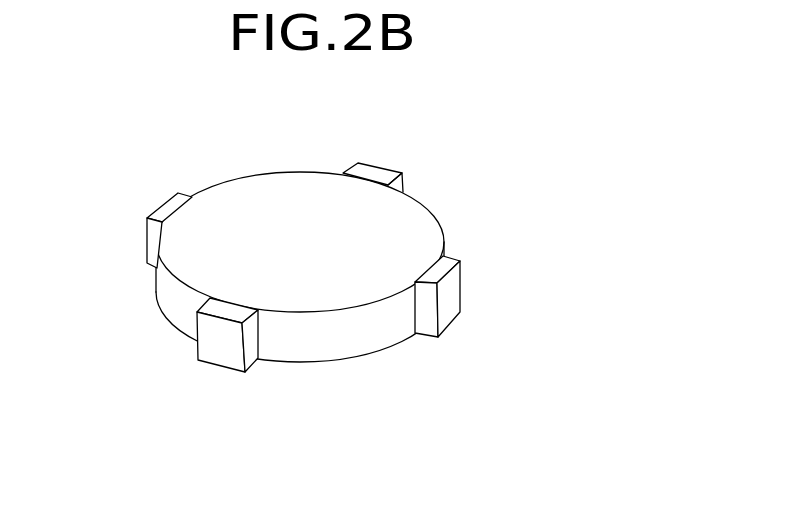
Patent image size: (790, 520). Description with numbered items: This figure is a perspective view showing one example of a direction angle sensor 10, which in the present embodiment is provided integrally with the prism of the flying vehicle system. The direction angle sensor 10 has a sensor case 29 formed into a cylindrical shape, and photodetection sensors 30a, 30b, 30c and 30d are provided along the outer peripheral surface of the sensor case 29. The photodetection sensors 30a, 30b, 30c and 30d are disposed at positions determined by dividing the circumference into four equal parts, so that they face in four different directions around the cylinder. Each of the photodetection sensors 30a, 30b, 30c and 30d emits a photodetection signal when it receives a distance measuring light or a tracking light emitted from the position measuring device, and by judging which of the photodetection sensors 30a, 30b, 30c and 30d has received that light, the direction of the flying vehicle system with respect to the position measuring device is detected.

The direction angle sensor 10 is at (344, 258).
The sensor case 29 is at (256, 172).
The photodetection sensor 30a is at (455, 320).
The photodetection sensor 30b is at (217, 363).
The photodetection sensor 30c is at (150, 214).
The photodetection sensor 30d is at (380, 165).